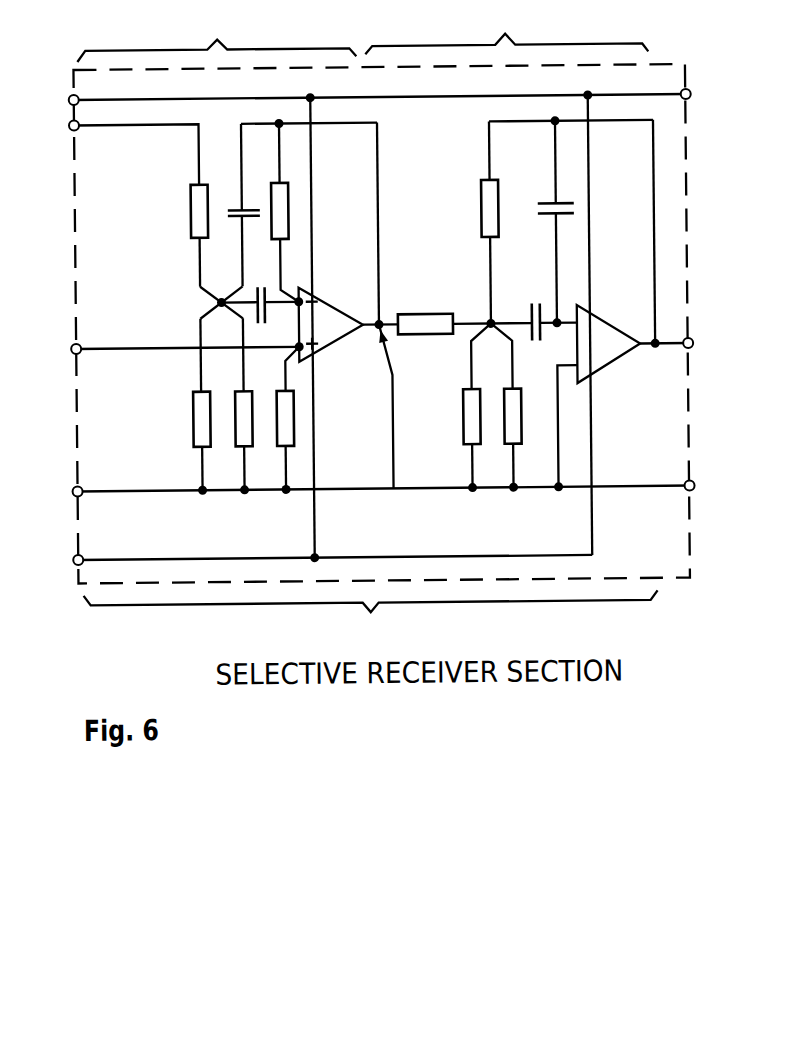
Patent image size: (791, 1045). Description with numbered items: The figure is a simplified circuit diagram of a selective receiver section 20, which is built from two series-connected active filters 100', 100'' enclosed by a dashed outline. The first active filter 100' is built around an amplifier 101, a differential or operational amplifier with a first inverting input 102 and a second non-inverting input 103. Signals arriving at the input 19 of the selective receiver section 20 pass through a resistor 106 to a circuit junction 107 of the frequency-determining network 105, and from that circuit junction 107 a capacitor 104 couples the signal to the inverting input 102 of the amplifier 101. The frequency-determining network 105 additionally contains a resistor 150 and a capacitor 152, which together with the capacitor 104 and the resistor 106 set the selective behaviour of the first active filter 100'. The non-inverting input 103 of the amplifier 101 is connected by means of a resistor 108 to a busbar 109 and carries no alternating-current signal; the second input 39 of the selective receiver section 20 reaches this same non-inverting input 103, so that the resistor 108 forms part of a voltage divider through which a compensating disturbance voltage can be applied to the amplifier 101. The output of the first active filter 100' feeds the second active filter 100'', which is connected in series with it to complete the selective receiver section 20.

The input 19 is at (71, 129).
The second input 39 is at (71, 353).
The selective receiver section 20 is at (381, 359).
The first active filter 100' is at (217, 31).
The second active filter 100'' is at (507, 27).
The amplifier 101 is at (313, 297).
The inverting input 102 is at (297, 307).
The non-inverting input 103 is at (317, 366).
The capacitor 104 is at (257, 289).
The frequency-determining network 105 is at (258, 147).
The resistor 106 is at (192, 214).
The circuit junction 107 is at (222, 304).
The resistor 108 is at (294, 425).
The busbar 109 is at (344, 491).
The resistor 150 is at (288, 214).
The capacitor 152 is at (233, 206).